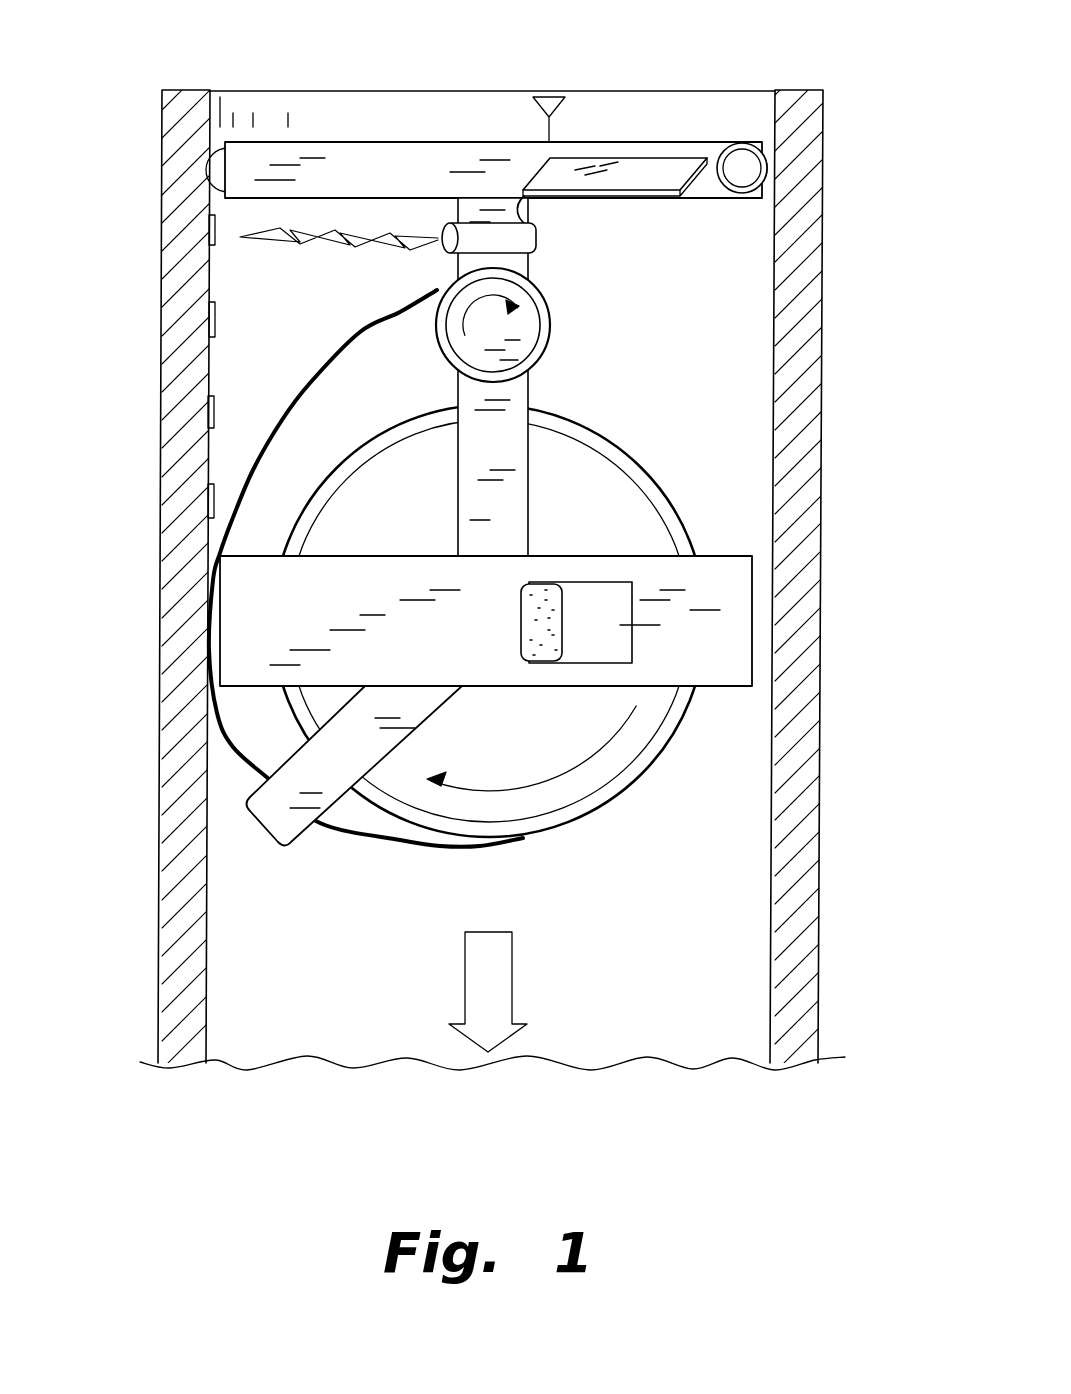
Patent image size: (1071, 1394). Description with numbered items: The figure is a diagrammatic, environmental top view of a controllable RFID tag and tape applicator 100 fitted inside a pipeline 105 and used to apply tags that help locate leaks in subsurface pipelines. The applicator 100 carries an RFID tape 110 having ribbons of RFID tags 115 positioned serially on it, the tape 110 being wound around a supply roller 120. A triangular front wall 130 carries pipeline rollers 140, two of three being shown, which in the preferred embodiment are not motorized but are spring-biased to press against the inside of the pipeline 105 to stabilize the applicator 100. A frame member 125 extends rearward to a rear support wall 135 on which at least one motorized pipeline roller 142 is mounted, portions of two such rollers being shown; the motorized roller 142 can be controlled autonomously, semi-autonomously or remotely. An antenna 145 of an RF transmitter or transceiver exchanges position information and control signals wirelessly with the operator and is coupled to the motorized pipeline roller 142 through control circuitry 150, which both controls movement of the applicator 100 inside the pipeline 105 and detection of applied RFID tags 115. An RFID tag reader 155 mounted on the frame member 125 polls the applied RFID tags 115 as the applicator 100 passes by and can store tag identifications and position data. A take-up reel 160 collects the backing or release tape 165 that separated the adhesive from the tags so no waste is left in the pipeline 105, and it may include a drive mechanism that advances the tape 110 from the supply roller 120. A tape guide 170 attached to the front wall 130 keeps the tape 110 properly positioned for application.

The RFID tag and tape applicator 100 is at (648, 866).
The pipeline 105 is at (160, 352).
The RFID tape 110 is at (213, 458).
The RFID tags 115 is at (212, 250).
The supply roller 120 is at (630, 747).
The frame member 125 is at (457, 390).
The front wall 130 is at (728, 556).
The rear support wall 135 is at (343, 141).
The pipeline rollers 140 is at (222, 613).
The motorized pipeline roller 142 is at (214, 165).
The antenna 145 is at (555, 108).
The control circuitry 150 is at (660, 162).
The RFID tag reader 155 is at (540, 240).
The take-up reel 160 is at (552, 333).
The backing or release tape 165 is at (358, 328).
The tape guide 170 is at (293, 847).